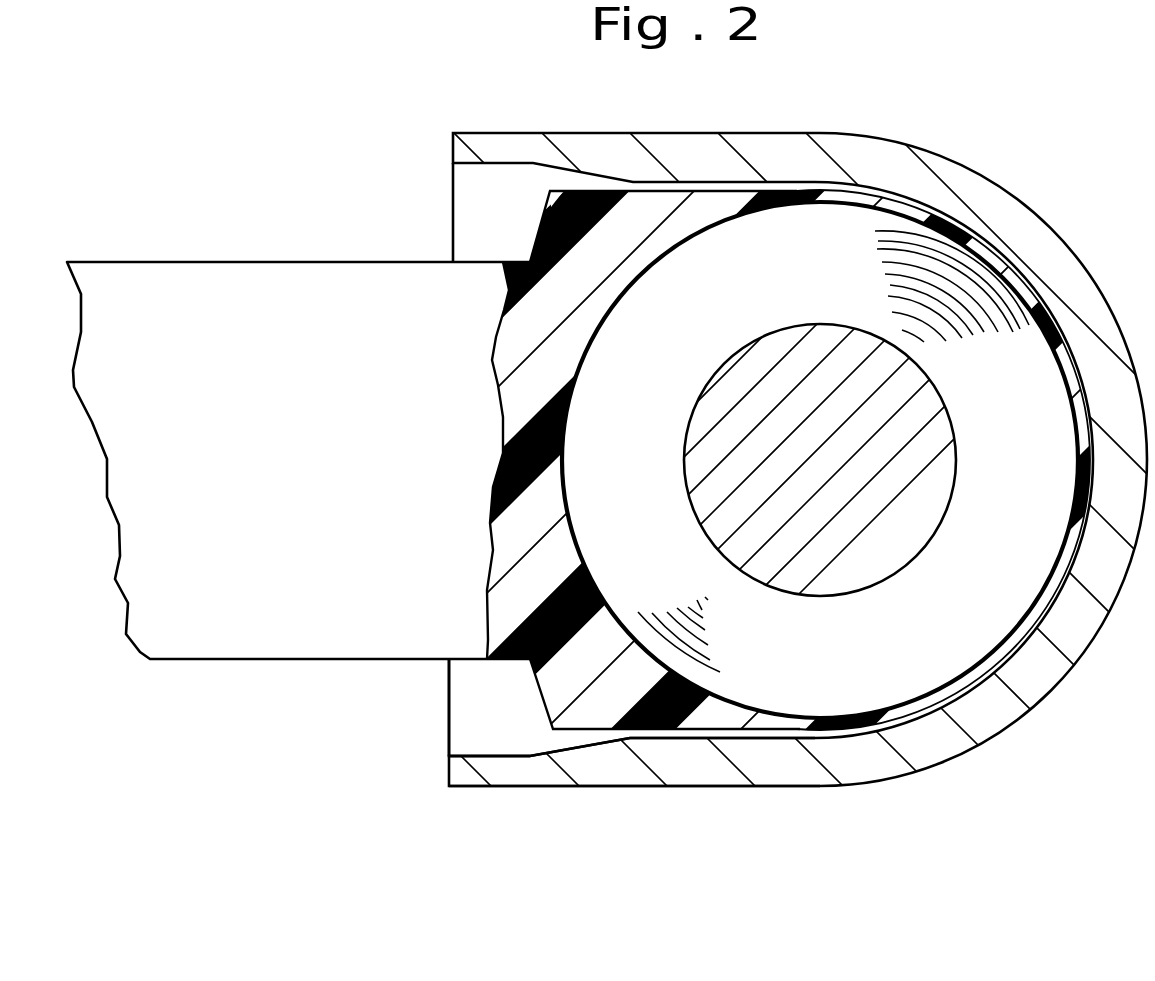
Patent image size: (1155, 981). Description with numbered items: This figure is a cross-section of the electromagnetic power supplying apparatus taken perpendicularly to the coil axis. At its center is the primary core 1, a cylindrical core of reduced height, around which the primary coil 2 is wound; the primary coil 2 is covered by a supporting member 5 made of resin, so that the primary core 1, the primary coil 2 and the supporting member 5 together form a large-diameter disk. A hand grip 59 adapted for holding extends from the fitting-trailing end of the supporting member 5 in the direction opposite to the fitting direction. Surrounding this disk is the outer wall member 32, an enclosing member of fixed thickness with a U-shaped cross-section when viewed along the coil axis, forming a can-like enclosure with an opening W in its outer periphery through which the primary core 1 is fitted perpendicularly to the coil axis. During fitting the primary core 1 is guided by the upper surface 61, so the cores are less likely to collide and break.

The opening W is at (451, 227).
The primary core 1 is at (832, 523).
The primary coil 2 is at (842, 660).
The supporting member 5 is at (593, 662).
The outer wall member 32 is at (773, 762).
The hand grip 59 is at (280, 605).
The upper surface 61 is at (483, 701).